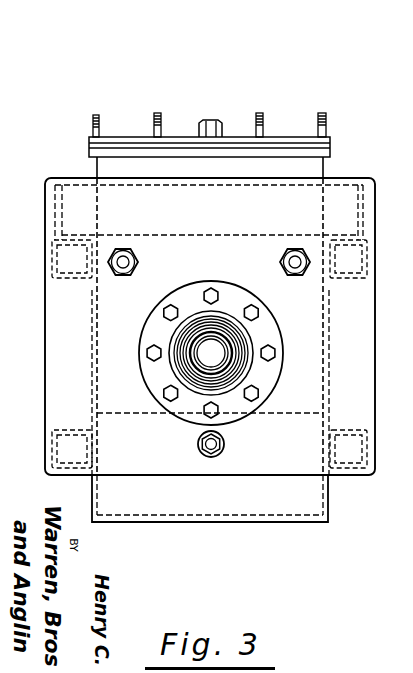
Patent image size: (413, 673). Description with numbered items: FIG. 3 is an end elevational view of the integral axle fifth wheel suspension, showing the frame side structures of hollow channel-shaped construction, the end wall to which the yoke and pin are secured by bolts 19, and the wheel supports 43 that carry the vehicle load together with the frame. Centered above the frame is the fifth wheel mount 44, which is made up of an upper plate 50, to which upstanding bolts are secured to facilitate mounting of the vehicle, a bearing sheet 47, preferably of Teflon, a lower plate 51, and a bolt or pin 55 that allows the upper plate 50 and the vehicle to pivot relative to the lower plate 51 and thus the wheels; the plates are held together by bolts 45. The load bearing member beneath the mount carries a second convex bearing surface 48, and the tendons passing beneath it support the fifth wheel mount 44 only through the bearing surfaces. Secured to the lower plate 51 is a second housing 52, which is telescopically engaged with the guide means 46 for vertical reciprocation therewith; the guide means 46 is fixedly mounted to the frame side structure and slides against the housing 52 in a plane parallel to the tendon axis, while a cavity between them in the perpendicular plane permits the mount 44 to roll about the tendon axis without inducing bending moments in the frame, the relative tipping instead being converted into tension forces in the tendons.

The bolts 19 is at (114, 262).
The wheel supports 43 is at (155, 333).
The fifth wheel mount 44 is at (223, 115).
The bolts 45 is at (160, 113).
The guide means 46 is at (331, 372).
The bearing sheet 47 is at (270, 349).
The second convex bearing surface 48 is at (276, 385).
The upper plate 50 is at (234, 138).
The lower plate 51 is at (131, 153).
The second housing 52 is at (319, 171).
The bolt or pin 55 is at (211, 119).